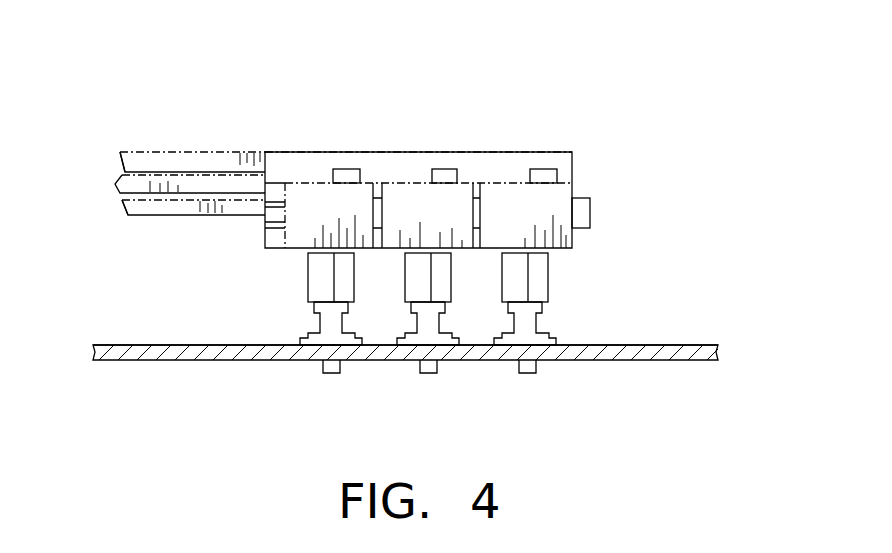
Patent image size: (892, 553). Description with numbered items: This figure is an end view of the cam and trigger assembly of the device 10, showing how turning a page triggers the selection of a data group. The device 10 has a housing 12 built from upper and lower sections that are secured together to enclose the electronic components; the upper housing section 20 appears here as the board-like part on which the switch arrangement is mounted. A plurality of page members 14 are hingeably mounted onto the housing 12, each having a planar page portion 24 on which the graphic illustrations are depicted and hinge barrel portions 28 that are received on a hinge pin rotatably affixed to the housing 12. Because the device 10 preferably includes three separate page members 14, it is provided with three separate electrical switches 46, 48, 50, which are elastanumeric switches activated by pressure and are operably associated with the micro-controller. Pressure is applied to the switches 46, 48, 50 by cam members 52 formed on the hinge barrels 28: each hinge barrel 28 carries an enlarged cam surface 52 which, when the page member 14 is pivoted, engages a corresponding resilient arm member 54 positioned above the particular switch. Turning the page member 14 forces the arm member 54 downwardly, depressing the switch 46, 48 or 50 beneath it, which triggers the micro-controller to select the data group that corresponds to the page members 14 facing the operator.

The device 10 is at (627, 97).
The housing 12 is at (158, 373).
The page members 14 is at (209, 142).
The upper housing section 20 is at (263, 355).
The planar page portion 24 is at (138, 155).
The hinge barrel portions 28 is at (322, 212).
The electrical switch 46 is at (488, 345).
The electrical switch 48 is at (393, 343).
The electrical switch 50 is at (300, 333).
The cam members 52 is at (345, 169).
The resilient arm member 54 is at (320, 273).